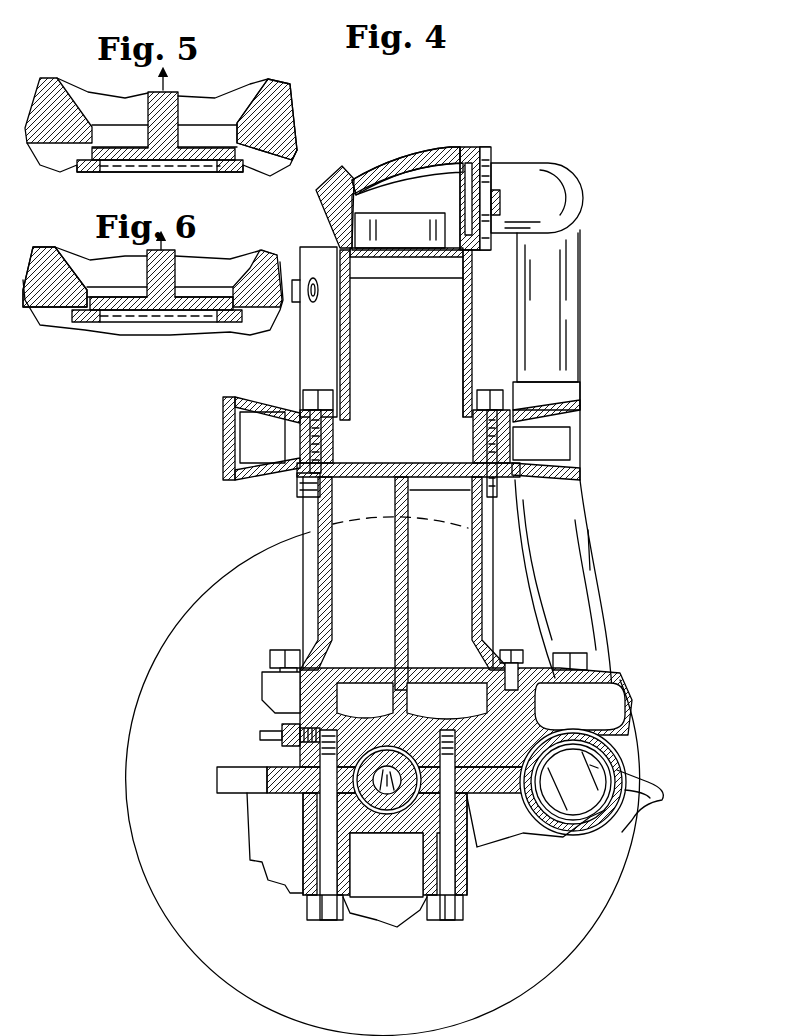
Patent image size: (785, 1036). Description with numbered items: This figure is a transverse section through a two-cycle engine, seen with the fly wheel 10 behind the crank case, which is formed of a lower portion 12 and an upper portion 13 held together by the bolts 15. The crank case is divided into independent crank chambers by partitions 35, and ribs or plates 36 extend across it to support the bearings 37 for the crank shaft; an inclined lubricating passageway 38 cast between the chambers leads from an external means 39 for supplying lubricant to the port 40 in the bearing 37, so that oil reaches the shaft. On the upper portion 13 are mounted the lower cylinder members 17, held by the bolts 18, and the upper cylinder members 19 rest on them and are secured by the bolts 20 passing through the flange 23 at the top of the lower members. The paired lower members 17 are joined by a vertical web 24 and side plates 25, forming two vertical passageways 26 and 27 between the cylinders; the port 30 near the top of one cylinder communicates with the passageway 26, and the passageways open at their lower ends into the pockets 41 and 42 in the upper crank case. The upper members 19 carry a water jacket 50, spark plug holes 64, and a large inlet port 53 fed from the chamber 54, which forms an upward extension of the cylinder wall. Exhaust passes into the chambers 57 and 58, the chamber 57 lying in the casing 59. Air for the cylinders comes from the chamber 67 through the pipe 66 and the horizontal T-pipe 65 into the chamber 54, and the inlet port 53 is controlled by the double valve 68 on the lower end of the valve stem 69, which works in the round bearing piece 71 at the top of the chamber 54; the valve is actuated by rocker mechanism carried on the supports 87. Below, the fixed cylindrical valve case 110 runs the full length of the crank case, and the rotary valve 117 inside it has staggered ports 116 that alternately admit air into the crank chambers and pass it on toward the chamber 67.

In FIG. 4, the fly wheel 10 is at (383, 776).
In FIG. 4, the lower portion of the crank case 12 is at (264, 836).
In FIG. 4, the upper portion of the crank case 13 is at (268, 712).
In FIG. 4, the bolts 15 is at (318, 822).
In FIG. 4, the lower portions or members of the cylinders 17 is at (318, 572).
In FIG. 4, the bolts 18 is at (282, 650).
In FIG. 5, the upper portions or members of the cylinders 19 is at (255, 162).
In FIG. 6, the upper portions or members of the cylinders 19 is at (58, 320).
In FIG. 4, the upper portions or members of the cylinders 19 is at (406, 334).
In FIG. 4, the bolts 20 is at (312, 390).
In FIG. 4, the flange 23 is at (300, 492).
In FIG. 4, the vertical web 24 is at (396, 548).
In FIG. 4, the side plates 25 is at (320, 600).
In FIG. 4, the vertical passageway 26 is at (431, 601).
In FIG. 4, the vertical passageway 27 is at (356, 608).
In FIG. 4, the port 30 is at (458, 486).
In FIG. 4, the partitions 35 is at (385, 880).
In FIG. 4, the ribs or plates 36 is at (406, 828).
In FIG. 4, the bearings 37 is at (370, 833).
In FIG. 4, the lubricating passageway 38 is at (308, 744).
In FIG. 4, the external means for supplying lubricant 39 is at (262, 736).
In FIG. 4, the port 40 is at (383, 745).
In FIG. 4, the pocket 41 is at (447, 701).
In FIG. 4, the pocket 42 is at (365, 700).
In FIG. 4, the water jacket 50 is at (470, 306).
In FIG. 5, the inlet port 53 is at (206, 136).
In FIG. 6, the inlet port 53 is at (212, 292).
In FIG. 5, the chamber 54 is at (273, 92).
In FIG. 6, the chamber 54 is at (58, 248).
In FIG. 4, the chamber 54 is at (443, 160).
In FIG. 4, the chamber 57 is at (546, 453).
In FIG. 4, the chamber 58 is at (261, 438).
In FIG. 4, the casing 59 is at (548, 415).
In FIG. 4, the spark plug holes 64 is at (313, 280).
In FIG. 4, the horizontal pipe 65 is at (537, 198).
In FIG. 4, the pipe 66 is at (570, 318).
In FIG. 4, the chamber 67 is at (626, 692).
In FIG. 5, the double valve 68 is at (203, 170).
In FIG. 6, the double valve 68 is at (160, 312).
In FIG. 5, the valve stem 69 is at (172, 100).
In FIG. 6, the valve stem 69 is at (147, 284).
In FIG. 4, the round bearing piece 71 is at (400, 230).
In FIG. 4, the supports 87 is at (345, 178).
In FIG. 4, the cylindrical valve case 110 is at (626, 755).
In FIG. 4, the ports 116 is at (573, 781).
In FIG. 4, the rotary valve 117 is at (598, 825).